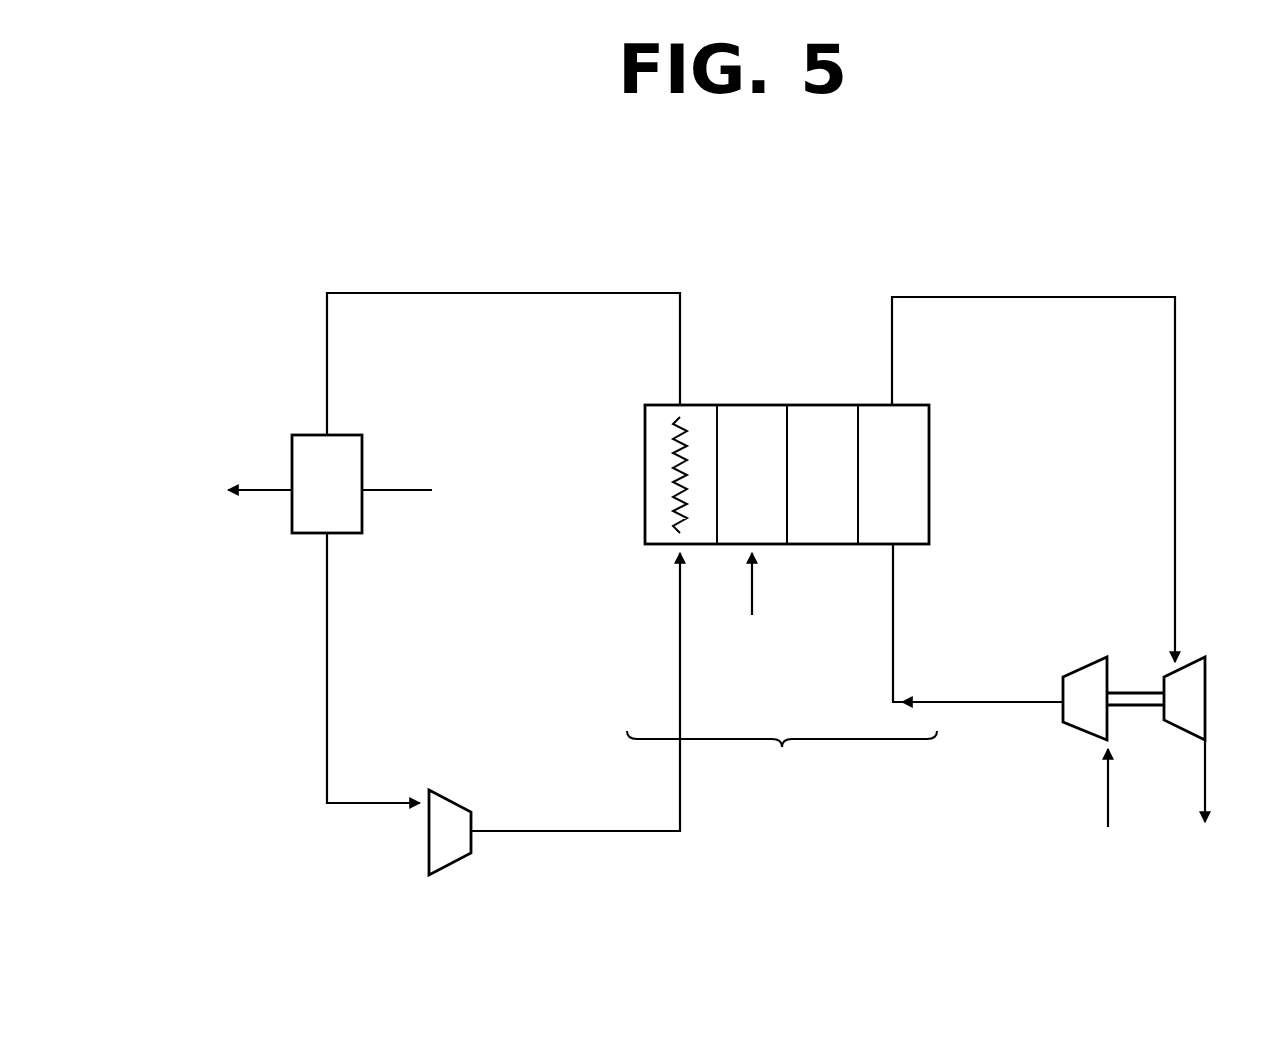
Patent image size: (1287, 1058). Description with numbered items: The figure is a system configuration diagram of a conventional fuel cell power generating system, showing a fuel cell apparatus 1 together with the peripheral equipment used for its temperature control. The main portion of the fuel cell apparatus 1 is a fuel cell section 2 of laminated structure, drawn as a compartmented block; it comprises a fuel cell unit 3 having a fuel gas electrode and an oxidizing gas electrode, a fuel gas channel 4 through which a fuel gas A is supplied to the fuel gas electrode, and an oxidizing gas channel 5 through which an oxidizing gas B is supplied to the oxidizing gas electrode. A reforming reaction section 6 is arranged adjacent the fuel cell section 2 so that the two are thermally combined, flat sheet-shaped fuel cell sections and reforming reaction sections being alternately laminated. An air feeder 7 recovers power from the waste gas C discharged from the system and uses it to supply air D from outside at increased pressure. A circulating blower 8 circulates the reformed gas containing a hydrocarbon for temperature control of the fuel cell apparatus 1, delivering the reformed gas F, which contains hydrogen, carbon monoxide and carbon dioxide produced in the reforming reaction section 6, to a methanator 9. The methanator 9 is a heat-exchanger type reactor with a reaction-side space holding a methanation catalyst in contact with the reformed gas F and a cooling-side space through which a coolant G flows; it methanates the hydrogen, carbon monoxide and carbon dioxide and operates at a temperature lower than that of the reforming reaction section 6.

The fuel cell apparatus 1 is at (792, 792).
The fuel cell section 2 is at (822, 545).
The fuel cell unit 3 is at (823, 405).
The fuel gas channel 4 is at (745, 405).
The oxidizing gas channel 5 is at (906, 405).
The reforming reaction section 6 is at (645, 460).
The air feeder 7 is at (1193, 660).
The circulating blower 8 is at (429, 845).
The methanator 9 is at (291, 455).
The fuel gas A is at (755, 588).
The oxidizing gas B is at (895, 645).
The waste gas C is at (1208, 777).
The air D is at (1106, 792).
The reformed gas F is at (496, 293).
The coolant G is at (346, 490).